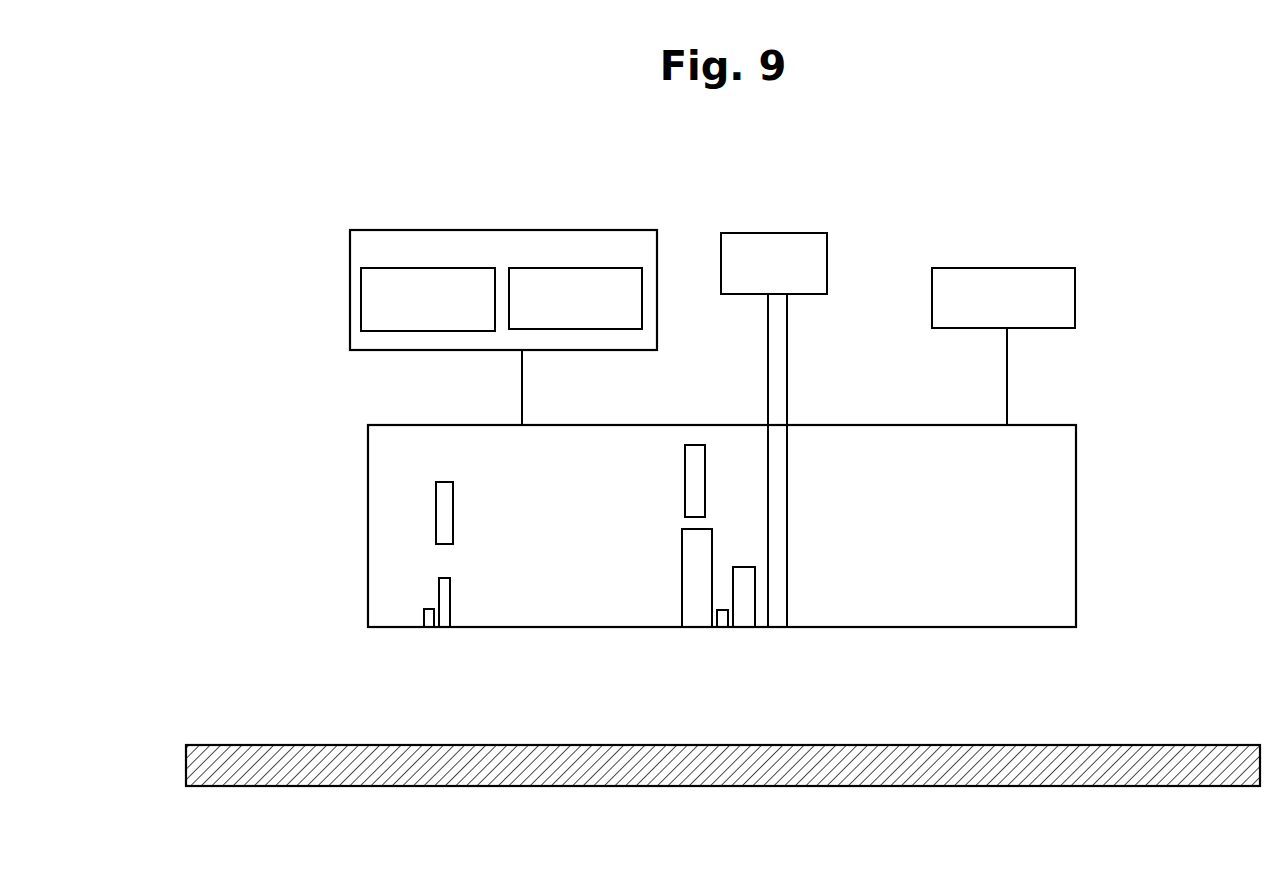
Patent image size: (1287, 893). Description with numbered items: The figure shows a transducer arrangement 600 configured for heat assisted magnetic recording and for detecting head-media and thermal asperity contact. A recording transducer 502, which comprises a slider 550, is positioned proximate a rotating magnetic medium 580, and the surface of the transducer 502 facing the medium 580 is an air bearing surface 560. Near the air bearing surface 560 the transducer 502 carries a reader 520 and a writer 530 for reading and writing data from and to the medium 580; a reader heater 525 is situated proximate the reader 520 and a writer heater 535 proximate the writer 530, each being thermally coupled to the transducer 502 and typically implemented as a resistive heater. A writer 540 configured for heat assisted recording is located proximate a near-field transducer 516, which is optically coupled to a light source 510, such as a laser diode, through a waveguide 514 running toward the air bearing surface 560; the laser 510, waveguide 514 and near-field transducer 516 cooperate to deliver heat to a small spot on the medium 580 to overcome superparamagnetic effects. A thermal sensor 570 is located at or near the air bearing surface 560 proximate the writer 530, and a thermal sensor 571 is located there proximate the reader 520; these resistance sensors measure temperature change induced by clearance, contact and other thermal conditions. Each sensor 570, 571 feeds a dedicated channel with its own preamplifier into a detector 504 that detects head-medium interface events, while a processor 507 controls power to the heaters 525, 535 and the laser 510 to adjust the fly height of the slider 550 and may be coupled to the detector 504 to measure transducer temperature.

The transducer arrangement 600 is at (271, 181).
The detector 504 is at (555, 230).
The light source 510 is at (827, 258).
The processor 507 is at (1009, 268).
The waveguide 514 is at (787, 363).
The recording transducer 502 is at (1076, 480).
The reader heater 525 is at (453, 513).
The reader 520 is at (450, 603).
The thermal sensor 571 is at (431, 628).
The writer 540 is at (651, 549).
The writer heater 535 is at (685, 487).
The writer 530 is at (682, 587).
The thermal sensor 570 is at (722, 628).
The near-field transducer 516 is at (742, 567).
The slider 550 is at (390, 639).
The air bearing surface 560 is at (833, 639).
The magnetic medium 580 is at (1209, 745).